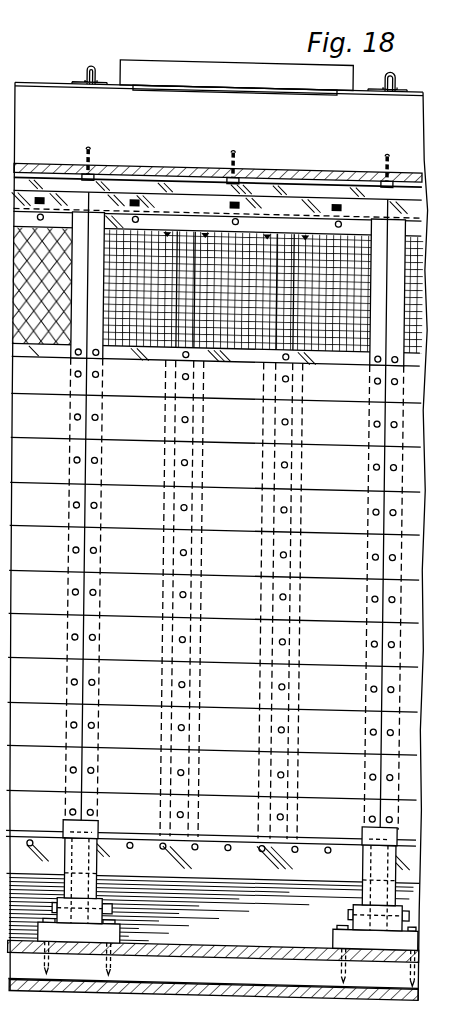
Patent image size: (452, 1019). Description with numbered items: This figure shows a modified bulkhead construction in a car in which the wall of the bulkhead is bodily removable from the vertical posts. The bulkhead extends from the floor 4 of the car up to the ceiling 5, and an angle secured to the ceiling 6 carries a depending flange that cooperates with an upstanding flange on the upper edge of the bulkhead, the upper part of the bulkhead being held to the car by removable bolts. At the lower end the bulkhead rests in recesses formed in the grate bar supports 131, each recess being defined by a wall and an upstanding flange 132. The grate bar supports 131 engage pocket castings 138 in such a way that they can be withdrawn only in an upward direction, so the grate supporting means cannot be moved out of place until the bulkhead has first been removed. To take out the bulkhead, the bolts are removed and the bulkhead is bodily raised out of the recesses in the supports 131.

The floor 4 is at (284, 943).
The ceiling 5 is at (38, 86).
The ceiling 6 is at (142, 163).
The grate bar support 131 is at (99, 880).
The upstanding flange 132 is at (100, 823).
The pocket casting 138 is at (91, 928).